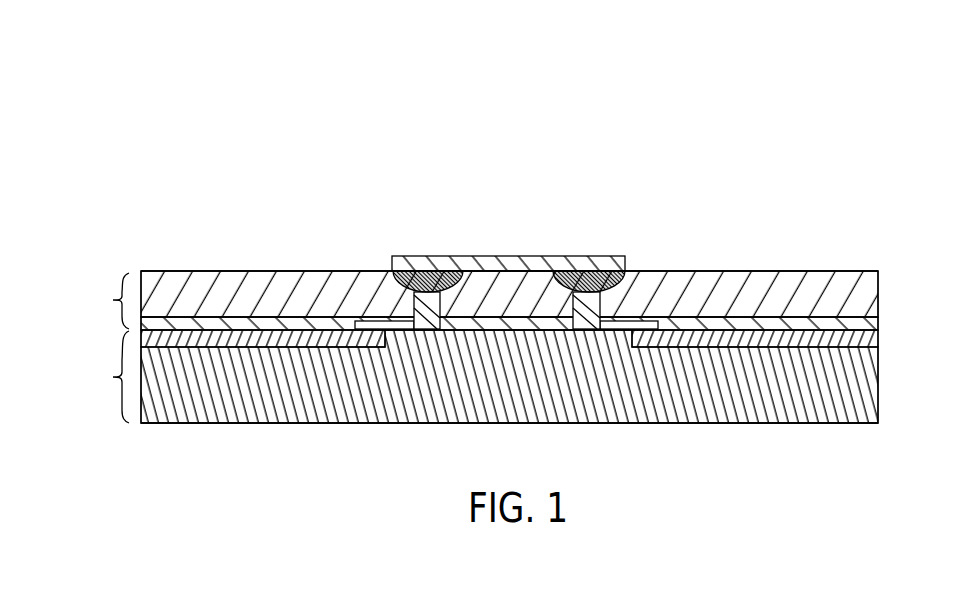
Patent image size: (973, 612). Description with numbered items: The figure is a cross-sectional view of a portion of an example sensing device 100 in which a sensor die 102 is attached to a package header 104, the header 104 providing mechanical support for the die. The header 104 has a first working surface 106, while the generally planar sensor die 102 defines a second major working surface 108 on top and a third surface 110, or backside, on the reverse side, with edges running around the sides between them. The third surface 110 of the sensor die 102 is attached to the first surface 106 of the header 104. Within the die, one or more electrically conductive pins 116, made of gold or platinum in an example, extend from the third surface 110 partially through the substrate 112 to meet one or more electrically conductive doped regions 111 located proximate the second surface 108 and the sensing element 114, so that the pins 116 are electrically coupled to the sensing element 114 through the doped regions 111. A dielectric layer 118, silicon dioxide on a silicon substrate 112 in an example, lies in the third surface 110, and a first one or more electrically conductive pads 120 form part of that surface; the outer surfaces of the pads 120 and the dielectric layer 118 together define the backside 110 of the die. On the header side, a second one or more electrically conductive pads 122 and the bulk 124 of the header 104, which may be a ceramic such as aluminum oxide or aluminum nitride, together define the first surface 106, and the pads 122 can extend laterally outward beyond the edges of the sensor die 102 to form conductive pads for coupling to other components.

The sensing device 100 is at (627, 146).
The sensor die 102 is at (470, 301).
The package header 104 is at (470, 377).
The first working surface 106 is at (245, 321).
The second working surface 108 is at (717, 268).
The third surface 110 is at (512, 337).
The electrically conductive doped regions 111 is at (419, 268).
The substrate 112 is at (818, 291).
The sensing element 114 is at (469, 267).
The electrically conductive pins 116 is at (427, 331).
The dielectric layer 118 is at (157, 318).
The first electrically conductive pads 120 is at (368, 322).
The second electrically conductive pads 122 is at (288, 342).
The bulk of the header 124 is at (391, 381).